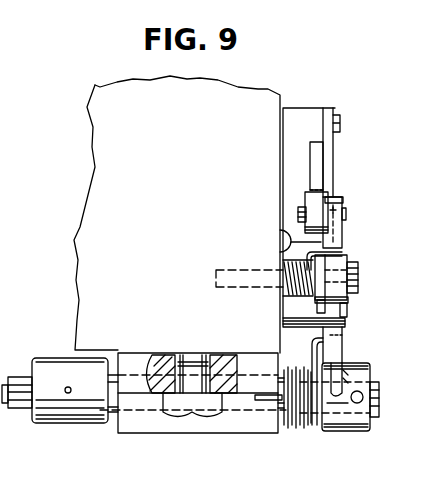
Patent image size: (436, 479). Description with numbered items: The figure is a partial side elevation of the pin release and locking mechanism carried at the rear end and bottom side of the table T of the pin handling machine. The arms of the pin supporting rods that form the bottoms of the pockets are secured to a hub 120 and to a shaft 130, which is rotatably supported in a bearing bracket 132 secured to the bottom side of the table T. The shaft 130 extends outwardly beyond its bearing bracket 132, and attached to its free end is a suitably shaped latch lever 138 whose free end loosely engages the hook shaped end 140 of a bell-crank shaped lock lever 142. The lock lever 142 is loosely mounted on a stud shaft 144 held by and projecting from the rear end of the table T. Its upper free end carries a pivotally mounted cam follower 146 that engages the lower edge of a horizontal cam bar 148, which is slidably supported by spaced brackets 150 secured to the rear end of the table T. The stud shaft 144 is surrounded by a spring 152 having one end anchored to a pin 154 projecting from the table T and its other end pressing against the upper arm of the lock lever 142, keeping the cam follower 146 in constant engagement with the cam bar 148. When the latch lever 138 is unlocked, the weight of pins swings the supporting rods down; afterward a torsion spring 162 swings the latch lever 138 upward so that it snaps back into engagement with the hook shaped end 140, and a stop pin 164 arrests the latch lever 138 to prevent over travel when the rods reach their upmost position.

The table T is at (268, 83).
The hub 120 is at (68, 420).
The shaft 130 is at (371, 393).
The bearing bracket 132 is at (167, 427).
The latch lever 138 is at (333, 353).
The hook shaped end 140 is at (346, 308).
The lock lever 142 is at (341, 240).
The stud shaft 144 is at (353, 275).
The cam follower 146 is at (308, 222).
The cam bar 148 is at (317, 165).
The bracket 150 is at (308, 113).
The spring 152 is at (280, 295).
The pin 154 is at (286, 231).
The spring 162 is at (300, 423).
The stop pin 164 is at (285, 323).